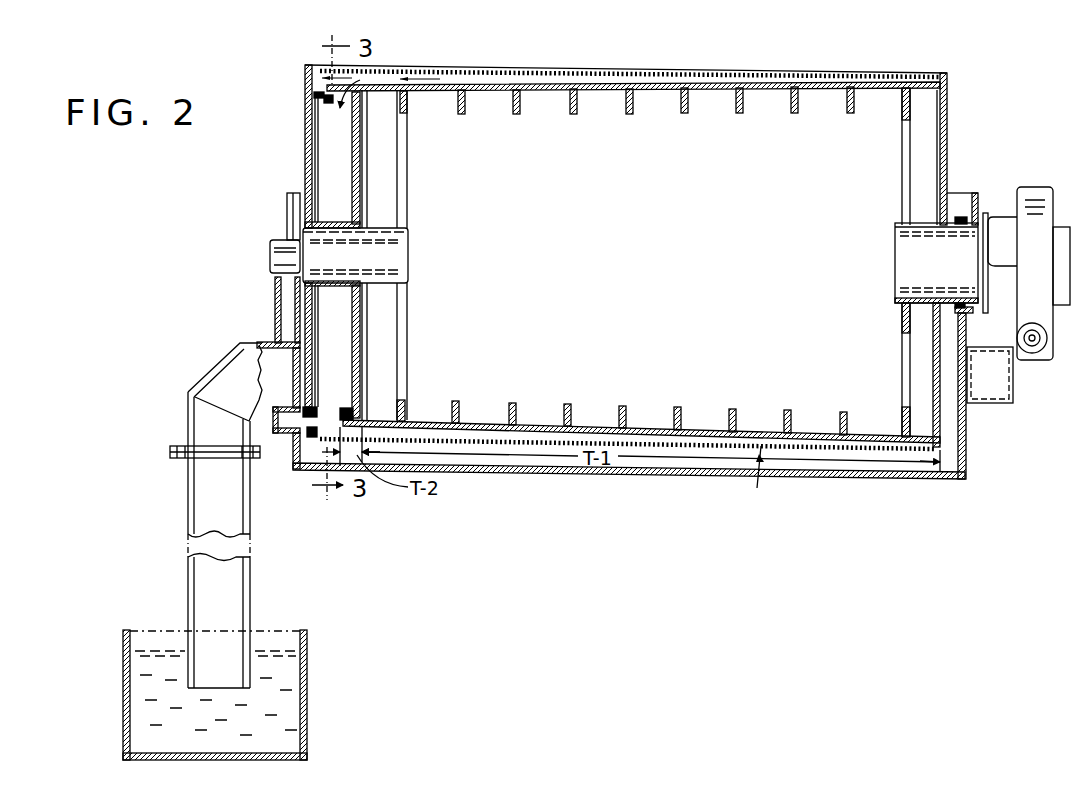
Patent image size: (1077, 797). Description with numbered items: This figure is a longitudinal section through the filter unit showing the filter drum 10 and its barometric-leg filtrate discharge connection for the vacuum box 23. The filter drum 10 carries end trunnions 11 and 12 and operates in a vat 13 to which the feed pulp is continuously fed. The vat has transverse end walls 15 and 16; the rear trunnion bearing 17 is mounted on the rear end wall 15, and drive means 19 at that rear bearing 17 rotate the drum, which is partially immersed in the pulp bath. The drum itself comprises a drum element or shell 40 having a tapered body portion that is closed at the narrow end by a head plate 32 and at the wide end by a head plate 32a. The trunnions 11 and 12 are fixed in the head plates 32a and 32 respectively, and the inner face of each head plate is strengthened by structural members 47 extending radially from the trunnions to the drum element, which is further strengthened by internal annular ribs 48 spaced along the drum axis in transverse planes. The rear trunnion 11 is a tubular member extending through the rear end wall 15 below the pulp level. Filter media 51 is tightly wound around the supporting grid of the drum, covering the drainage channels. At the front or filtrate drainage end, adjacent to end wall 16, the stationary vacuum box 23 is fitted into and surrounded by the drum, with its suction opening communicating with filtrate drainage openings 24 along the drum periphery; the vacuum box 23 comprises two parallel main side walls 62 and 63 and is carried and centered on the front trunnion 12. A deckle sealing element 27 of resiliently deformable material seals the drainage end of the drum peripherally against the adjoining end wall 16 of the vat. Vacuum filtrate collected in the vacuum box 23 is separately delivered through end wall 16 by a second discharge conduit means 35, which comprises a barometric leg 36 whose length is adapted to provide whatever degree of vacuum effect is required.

The filter drum 10 is at (708, 68).
The trunnion 11 is at (908, 244).
The trunnion 12 is at (400, 248).
The vat 13 is at (930, 488).
The end wall 15 is at (966, 436).
The end wall 16 is at (292, 468).
The trunnion bearing 17 is at (1007, 217).
The drive means 19 is at (1045, 335).
The vacuum box 23 is at (308, 163).
The filtrate drainage openings 24 is at (328, 102).
The deckle sealing element 27 is at (293, 446).
The head plate 32 is at (367, 167).
The head plate 32a is at (948, 116).
The second discharge conduit means 35 is at (285, 337).
The barometric leg 36 is at (195, 604).
The drum element 40 is at (580, 66).
The structural members 47 is at (928, 135).
The internal annular ribs 48 is at (682, 112).
The filter media 51 is at (760, 476).
The main side wall 62 is at (317, 130).
The main side wall 63 is at (353, 188).